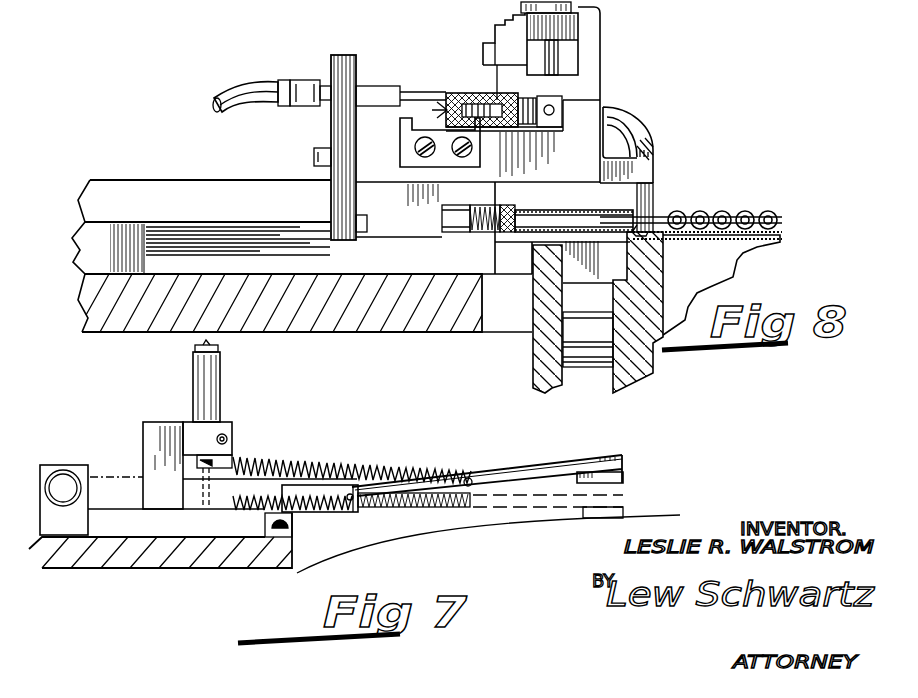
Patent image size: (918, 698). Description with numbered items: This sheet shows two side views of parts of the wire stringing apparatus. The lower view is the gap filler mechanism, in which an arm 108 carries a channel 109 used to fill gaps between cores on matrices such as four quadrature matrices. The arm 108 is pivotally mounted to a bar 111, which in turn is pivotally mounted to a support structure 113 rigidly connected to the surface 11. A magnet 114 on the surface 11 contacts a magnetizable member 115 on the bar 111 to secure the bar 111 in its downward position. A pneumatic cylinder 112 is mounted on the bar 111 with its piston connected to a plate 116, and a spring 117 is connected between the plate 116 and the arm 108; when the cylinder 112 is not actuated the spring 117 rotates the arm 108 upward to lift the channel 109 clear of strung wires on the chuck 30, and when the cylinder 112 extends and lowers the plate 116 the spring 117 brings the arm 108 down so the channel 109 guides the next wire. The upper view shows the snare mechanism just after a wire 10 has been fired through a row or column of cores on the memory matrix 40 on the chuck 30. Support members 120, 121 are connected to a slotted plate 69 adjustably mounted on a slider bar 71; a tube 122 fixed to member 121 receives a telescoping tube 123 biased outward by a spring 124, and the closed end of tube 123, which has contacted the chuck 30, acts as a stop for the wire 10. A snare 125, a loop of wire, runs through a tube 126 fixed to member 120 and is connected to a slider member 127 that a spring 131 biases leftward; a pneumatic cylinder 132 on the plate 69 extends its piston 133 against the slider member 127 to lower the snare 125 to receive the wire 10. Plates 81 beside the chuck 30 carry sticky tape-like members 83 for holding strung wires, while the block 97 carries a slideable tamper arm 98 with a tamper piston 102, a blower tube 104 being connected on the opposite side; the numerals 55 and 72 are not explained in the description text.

In FIG. 8, the wire 10 is at (774, 224).
In FIG. 8, the surface 11 is at (384, 334).
In FIG. 7, the surface 11 is at (183, 537).
In FIG. 8, the chuck 30 is at (664, 264).
In FIG. 7, the chuck 30 is at (383, 546).
In FIG. 8, the memory matrix 40 is at (752, 214).
In FIG. 8, the lubricating device 55 is at (648, 103).
In FIG. 8, the slotted plate 69 is at (343, 62).
In FIG. 8, the slider bar 71 is at (268, 160).
In FIG. 8, the support bar 72 is at (84, 236).
In FIG. 8, the plates 81 is at (533, 352).
In FIG. 8, the tape-like member 83 is at (534, 247).
In FIG. 8, the block 97 is at (613, 95).
In FIG. 8, the tamper arm 98 is at (578, 20).
In FIG. 8, the tamper piston 102 is at (558, 62).
In FIG. 8, the blower tube 104 is at (498, 44).
In FIG. 7, the arm 108 is at (493, 476).
In FIG. 7, the channel 109 is at (623, 480).
In FIG. 7, the bar 111 is at (148, 509).
In FIG. 7, the pneumatic cylinder 112 is at (220, 379).
In FIG. 7, the support structure 113 is at (48, 465).
In FIG. 7, the magnet 114 is at (292, 520).
In FIG. 7, the magnetizable member 115 is at (295, 508).
In FIG. 7, the plate 116 is at (222, 463).
In FIG. 7, the spring 117 is at (343, 462).
In FIG. 8, the support member 120 is at (594, 102).
In FIG. 8, the support member 121 is at (387, 228).
In FIG. 8, the tube 122 is at (456, 232).
In FIG. 8, the tube 123 is at (582, 183).
In FIG. 8, the spring 124 is at (484, 234).
In FIG. 8, the snare 125 is at (650, 212).
In FIG. 8, the tube 126 is at (645, 118).
In FIG. 8, the slider member 127 is at (447, 93).
In FIG. 8, the spring 131 is at (518, 100).
In FIG. 8, the pneumatic cylinder 132 is at (305, 80).
In FIG. 8, the piston 133 is at (416, 88).